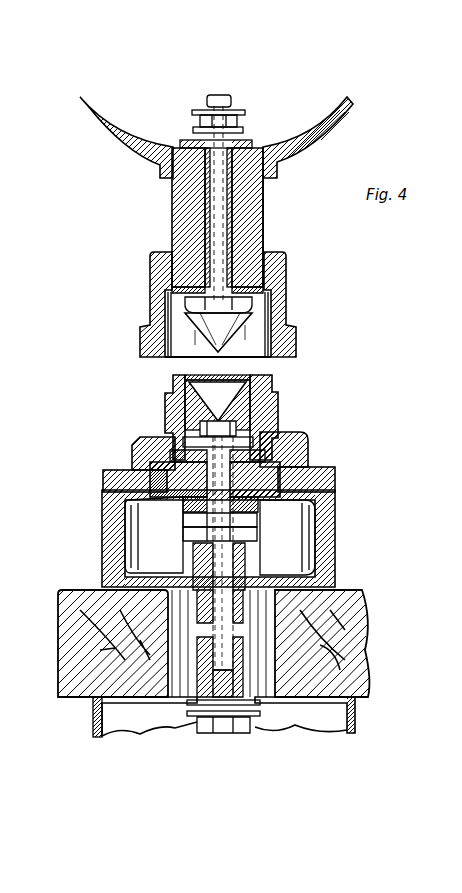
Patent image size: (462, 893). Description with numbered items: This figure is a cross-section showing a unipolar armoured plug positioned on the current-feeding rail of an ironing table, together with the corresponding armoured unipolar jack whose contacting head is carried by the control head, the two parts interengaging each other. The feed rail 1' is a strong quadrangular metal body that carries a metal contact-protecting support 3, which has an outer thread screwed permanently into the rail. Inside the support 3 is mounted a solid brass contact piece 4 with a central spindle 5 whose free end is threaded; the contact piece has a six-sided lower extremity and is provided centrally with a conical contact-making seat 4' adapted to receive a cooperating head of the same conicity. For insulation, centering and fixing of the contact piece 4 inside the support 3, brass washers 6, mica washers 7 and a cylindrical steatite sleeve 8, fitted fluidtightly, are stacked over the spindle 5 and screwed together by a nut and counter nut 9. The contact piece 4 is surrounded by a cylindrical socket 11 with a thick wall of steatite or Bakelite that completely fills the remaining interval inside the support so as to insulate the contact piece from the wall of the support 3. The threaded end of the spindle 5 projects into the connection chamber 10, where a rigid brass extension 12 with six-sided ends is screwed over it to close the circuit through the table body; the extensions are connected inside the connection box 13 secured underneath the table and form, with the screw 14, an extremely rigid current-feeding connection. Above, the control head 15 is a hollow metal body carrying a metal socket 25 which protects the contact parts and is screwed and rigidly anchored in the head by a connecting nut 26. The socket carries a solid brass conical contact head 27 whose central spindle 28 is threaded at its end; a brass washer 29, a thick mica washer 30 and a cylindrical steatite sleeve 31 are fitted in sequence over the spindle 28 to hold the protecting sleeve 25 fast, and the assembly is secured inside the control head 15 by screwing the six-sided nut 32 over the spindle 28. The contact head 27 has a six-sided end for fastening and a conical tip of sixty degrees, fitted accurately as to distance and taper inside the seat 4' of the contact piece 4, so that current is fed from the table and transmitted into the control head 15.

The feed rail 1' is at (239, 538).
The contact-protecting support 3 is at (152, 442).
The contact piece 4 is at (251, 429).
The conical contact-making seat 4' is at (254, 405).
The central spindle 5 is at (310, 452).
The brass washer 6 is at (170, 452).
The mica washer 7 is at (130, 492).
The cylindrical steatite sleeve 8 is at (336, 481).
The nut and counter nut 9 is at (258, 536).
The connection chamber 10 is at (158, 556).
The cylindrical socket 11 is at (168, 394).
The brass extension 12 is at (337, 563).
The connection box 13 is at (352, 724).
The screw 14 is at (212, 728).
The control head 15 is at (92, 110).
The metal socket 25 is at (265, 207).
The connecting nut 26 is at (288, 282).
The contact head 27 is at (250, 330).
The central spindle 28 is at (266, 235).
The brass washer 29 is at (310, 139).
The mica washer 30 is at (185, 141).
The cylindrical steatite sleeve 31 is at (205, 216).
The six-sided nut 32 is at (246, 129).